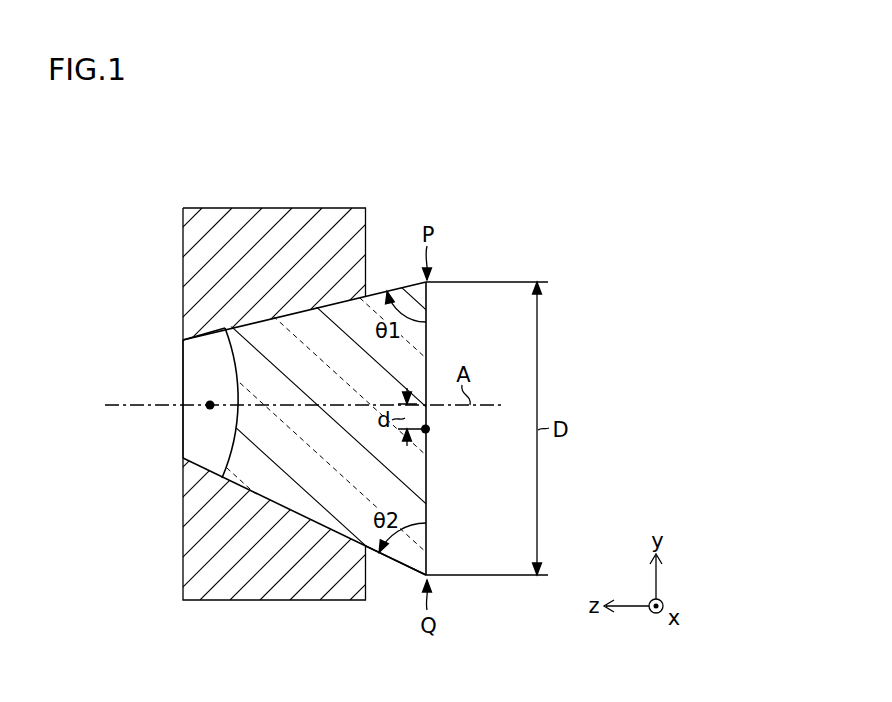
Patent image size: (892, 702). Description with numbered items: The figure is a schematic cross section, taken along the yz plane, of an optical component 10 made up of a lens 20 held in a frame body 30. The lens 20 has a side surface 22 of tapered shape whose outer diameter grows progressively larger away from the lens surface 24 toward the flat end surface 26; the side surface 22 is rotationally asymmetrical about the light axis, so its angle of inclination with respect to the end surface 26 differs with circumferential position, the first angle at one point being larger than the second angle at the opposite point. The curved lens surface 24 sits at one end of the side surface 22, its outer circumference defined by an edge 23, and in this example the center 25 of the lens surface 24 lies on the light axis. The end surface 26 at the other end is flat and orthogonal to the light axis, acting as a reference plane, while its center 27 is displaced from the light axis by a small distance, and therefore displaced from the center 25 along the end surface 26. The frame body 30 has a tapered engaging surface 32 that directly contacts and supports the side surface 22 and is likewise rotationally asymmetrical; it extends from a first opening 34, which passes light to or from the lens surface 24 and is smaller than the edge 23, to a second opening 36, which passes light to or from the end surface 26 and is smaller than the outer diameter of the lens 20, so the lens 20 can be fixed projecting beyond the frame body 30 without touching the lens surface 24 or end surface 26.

The optical component 10 is at (371, 170).
The lens 20 is at (447, 335).
The side surface 22 is at (388, 560).
The edge 23 is at (222, 328).
The lens surface 24 is at (210, 368).
The center of the lens surface 25 is at (208, 405).
The end surface 26 is at (430, 489).
The center of the end surface 27 is at (432, 430).
The frame body 30 is at (275, 202).
The engaging surface 32 is at (310, 510).
The first opening 34 is at (167, 452).
The second opening 36 is at (382, 280).